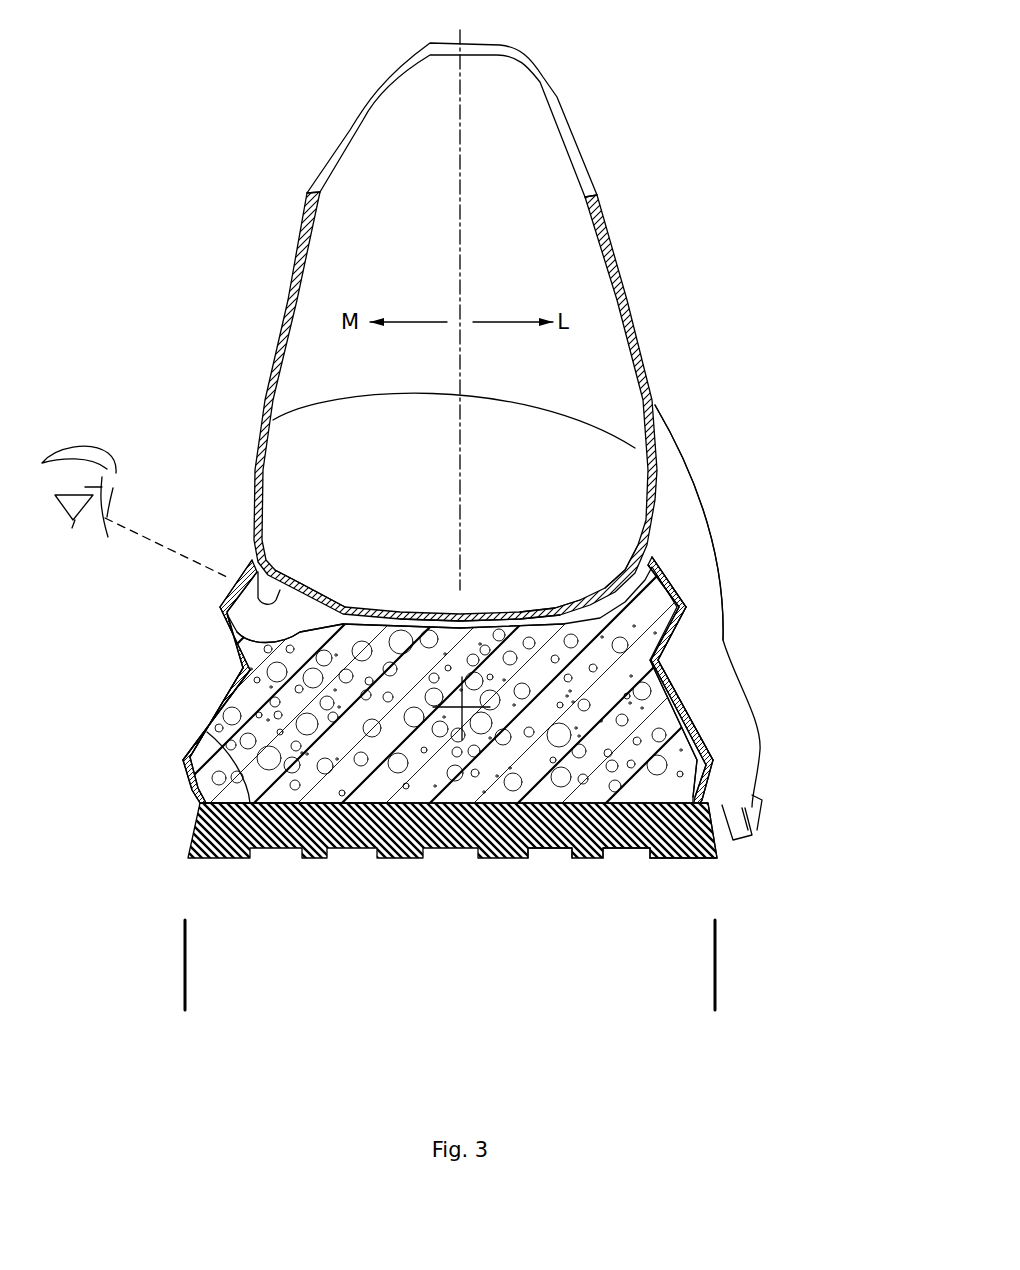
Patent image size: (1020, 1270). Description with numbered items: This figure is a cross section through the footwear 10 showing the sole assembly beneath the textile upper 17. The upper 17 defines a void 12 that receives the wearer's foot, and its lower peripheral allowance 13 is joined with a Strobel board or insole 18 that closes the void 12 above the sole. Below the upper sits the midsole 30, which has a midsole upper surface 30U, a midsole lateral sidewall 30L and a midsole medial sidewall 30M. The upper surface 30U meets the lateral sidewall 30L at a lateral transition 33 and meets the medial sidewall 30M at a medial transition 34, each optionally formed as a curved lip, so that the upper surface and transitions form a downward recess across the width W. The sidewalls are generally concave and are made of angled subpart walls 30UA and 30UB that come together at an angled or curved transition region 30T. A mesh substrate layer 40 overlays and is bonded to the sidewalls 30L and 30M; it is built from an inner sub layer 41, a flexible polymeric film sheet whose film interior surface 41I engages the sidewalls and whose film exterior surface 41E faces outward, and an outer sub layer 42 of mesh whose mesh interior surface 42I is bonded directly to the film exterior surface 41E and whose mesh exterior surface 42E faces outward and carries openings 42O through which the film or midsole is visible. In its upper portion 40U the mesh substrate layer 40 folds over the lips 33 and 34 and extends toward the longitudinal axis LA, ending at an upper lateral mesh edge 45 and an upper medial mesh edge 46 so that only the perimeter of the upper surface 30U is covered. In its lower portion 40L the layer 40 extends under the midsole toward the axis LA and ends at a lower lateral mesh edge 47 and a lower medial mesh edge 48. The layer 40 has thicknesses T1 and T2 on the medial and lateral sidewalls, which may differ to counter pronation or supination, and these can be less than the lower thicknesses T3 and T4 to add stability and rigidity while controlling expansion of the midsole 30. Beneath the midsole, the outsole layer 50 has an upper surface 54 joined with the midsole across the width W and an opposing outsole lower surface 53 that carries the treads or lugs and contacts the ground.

The footwear 10 is at (125, 302).
The void of the upper 12 is at (448, 514).
The lower peripheral allowance 13 is at (650, 530).
The textile upper 17 is at (263, 465).
The Strobel board 18 is at (563, 604).
The midsole 30 is at (505, 770).
The midsole upper surface 30U is at (414, 622).
The angled subpart wall 30UA is at (350, 617).
The angled subpart wall 30UB is at (253, 805).
The midsole lateral sidewall 30L is at (648, 697).
The midsole medial sidewall 30M is at (247, 673).
The transition region 30T is at (336, 745).
The lateral transition 33 is at (523, 622).
The medial transition 34 is at (283, 590).
The mesh substrate layer 40 is at (670, 638).
The upper portion of mesh substrate layer 40U is at (246, 553).
The lower portion of mesh substrate layer 40L is at (281, 803).
The inner sub layer 41 is at (674, 577).
The film interior surface 41I is at (651, 574).
The film exterior surface 41E is at (683, 607).
The outer sub layer 42 is at (684, 597).
The mesh interior surface 42I is at (667, 570).
The mesh exterior surface 42E is at (681, 583).
The openings 42O is at (218, 598).
The upper lateral mesh edge 45 is at (608, 597).
The upper medial mesh edge 46 is at (282, 600).
The lower lateral mesh edge 47 is at (673, 843).
The lower medial mesh edge 48 is at (250, 803).
The outsole layer 50 is at (512, 857).
The outsole lower surface 53 is at (580, 853).
The upper surface of the outsole 54 is at (610, 845).
The mesh substrate layer thickness on medial sidewall T1 is at (203, 712).
The mesh substrate layer thickness on lateral sidewall T2 is at (658, 730).
The lower thickness T3 is at (196, 802).
The lower thickness T4 is at (663, 767).
The longitudinal axis LA is at (462, 740).
The side-to-side width W is at (190, 977).